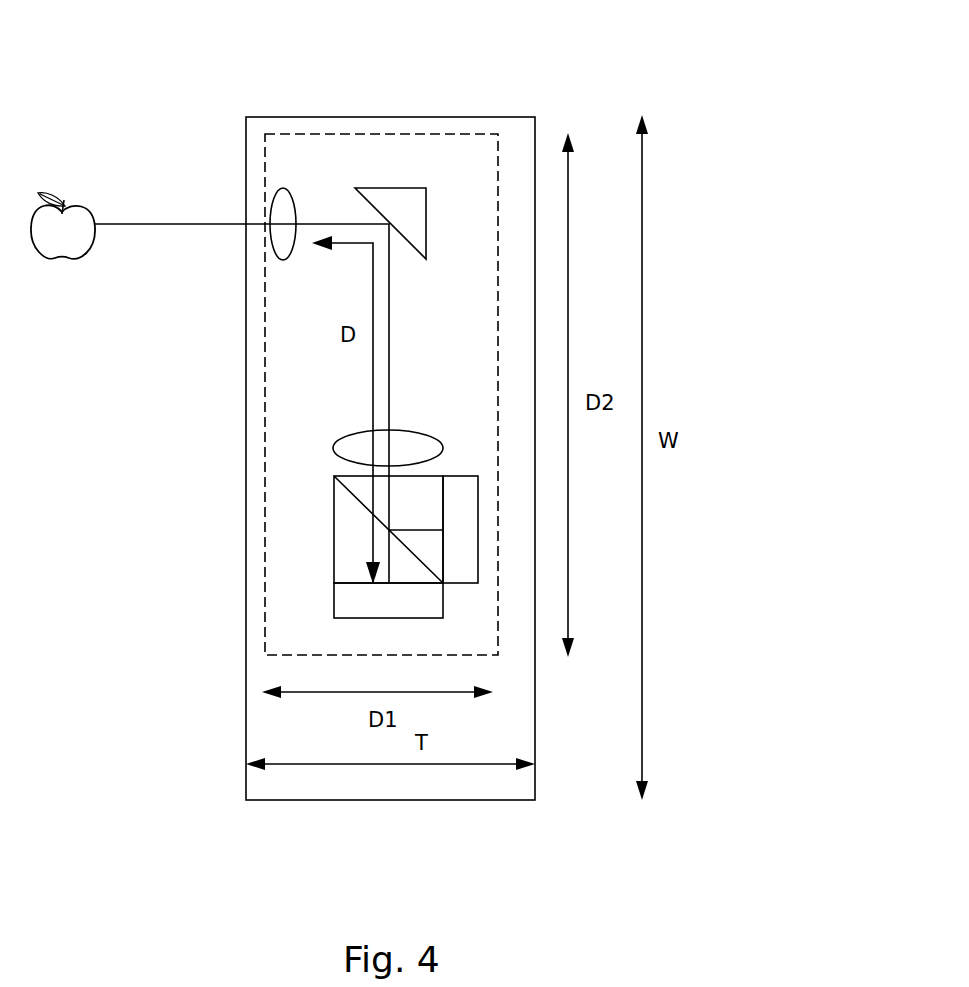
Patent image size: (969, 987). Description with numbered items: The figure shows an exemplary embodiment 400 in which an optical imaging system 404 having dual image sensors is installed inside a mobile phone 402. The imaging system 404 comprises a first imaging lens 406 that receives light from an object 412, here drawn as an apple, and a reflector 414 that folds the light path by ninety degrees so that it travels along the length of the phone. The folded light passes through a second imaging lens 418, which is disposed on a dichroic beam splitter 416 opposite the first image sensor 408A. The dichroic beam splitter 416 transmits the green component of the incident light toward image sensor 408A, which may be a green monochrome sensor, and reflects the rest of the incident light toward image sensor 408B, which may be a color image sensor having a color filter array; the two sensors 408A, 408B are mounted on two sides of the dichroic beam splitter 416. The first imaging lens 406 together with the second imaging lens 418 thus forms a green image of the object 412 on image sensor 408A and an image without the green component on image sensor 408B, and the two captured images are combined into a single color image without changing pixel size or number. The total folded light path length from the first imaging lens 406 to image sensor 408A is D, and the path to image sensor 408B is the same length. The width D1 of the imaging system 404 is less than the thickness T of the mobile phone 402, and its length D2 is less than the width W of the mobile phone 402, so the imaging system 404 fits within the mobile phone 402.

The exemplary embodiment 400 is at (153, 70).
The mobile phone 402 is at (498, 116).
The imaging system 404 is at (293, 134).
The first imaging lens 406 is at (294, 200).
The image sensor 408A is at (334, 605).
The image sensor 408B is at (470, 585).
The object 412 is at (95, 208).
The reflector 414 is at (427, 223).
The dichroic beam splitter 416 is at (334, 513).
The second imaging lens 418 is at (408, 432).